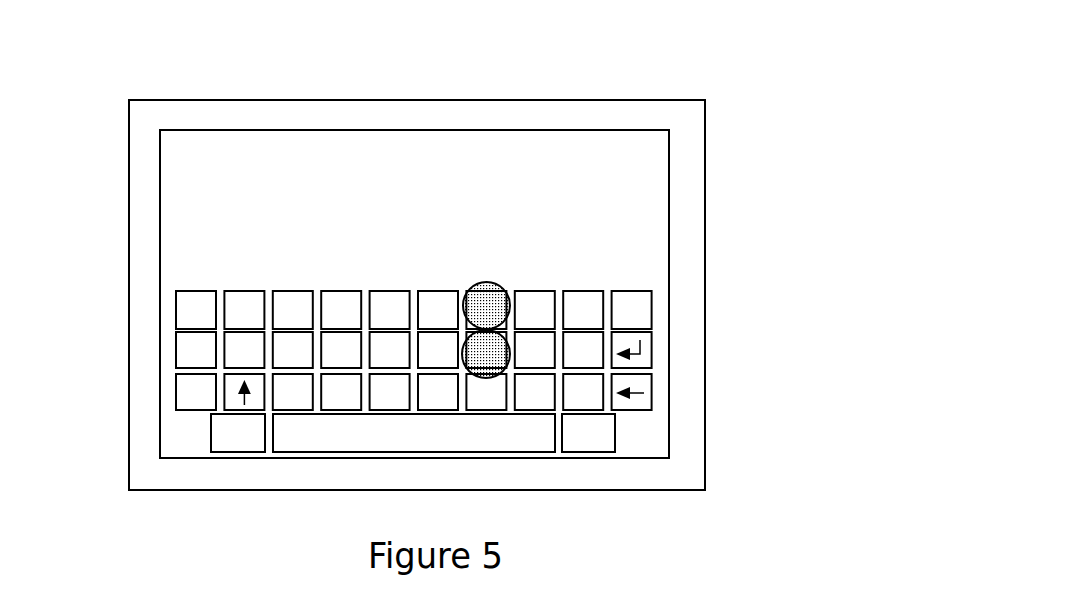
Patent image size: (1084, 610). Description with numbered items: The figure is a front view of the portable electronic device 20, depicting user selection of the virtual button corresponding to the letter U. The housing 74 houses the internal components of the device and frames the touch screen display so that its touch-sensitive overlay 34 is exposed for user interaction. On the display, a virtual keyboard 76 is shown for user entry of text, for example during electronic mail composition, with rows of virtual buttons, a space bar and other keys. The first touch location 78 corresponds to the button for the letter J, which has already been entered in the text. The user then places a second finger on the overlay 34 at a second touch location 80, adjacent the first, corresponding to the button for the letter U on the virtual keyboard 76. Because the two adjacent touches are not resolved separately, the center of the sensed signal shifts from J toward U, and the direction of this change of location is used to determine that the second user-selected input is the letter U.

The portable electronic device 20 is at (690, 68).
The touch-sensitive overlay 34 is at (621, 202).
The housing 74 is at (627, 475).
The virtual keyboard 76 is at (173, 359).
The first touch location 78 is at (497, 357).
The second touch location 80 is at (486, 304).